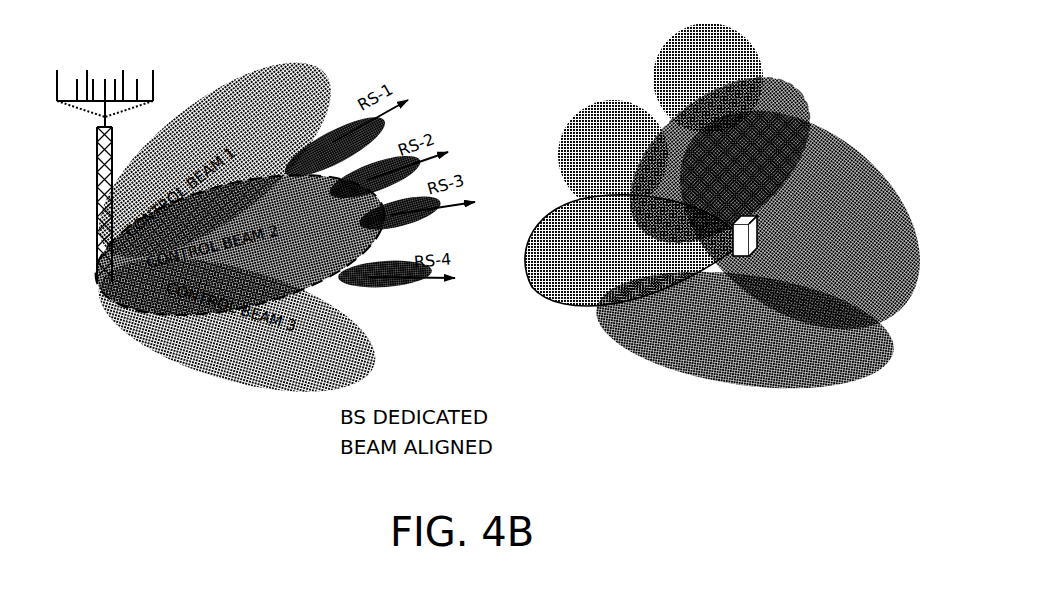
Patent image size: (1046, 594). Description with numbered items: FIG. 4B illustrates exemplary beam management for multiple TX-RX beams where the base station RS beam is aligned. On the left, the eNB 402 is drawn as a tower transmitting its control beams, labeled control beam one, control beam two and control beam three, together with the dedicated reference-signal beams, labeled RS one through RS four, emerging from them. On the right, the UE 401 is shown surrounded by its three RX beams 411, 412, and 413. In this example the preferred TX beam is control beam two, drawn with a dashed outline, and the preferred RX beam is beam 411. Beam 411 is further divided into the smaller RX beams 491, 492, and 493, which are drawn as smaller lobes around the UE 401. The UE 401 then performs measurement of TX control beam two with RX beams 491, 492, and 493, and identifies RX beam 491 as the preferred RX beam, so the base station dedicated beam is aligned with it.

The eNB 402 is at (127, 76).
The UE 401 is at (754, 228).
The RX beam 411 is at (746, 65).
The RX beam 412 is at (878, 270).
The RX beam 413 is at (714, 348).
The RX beam 491 is at (630, 250).
The RX beam 492 is at (613, 155).
The RX beam 493 is at (708, 78).